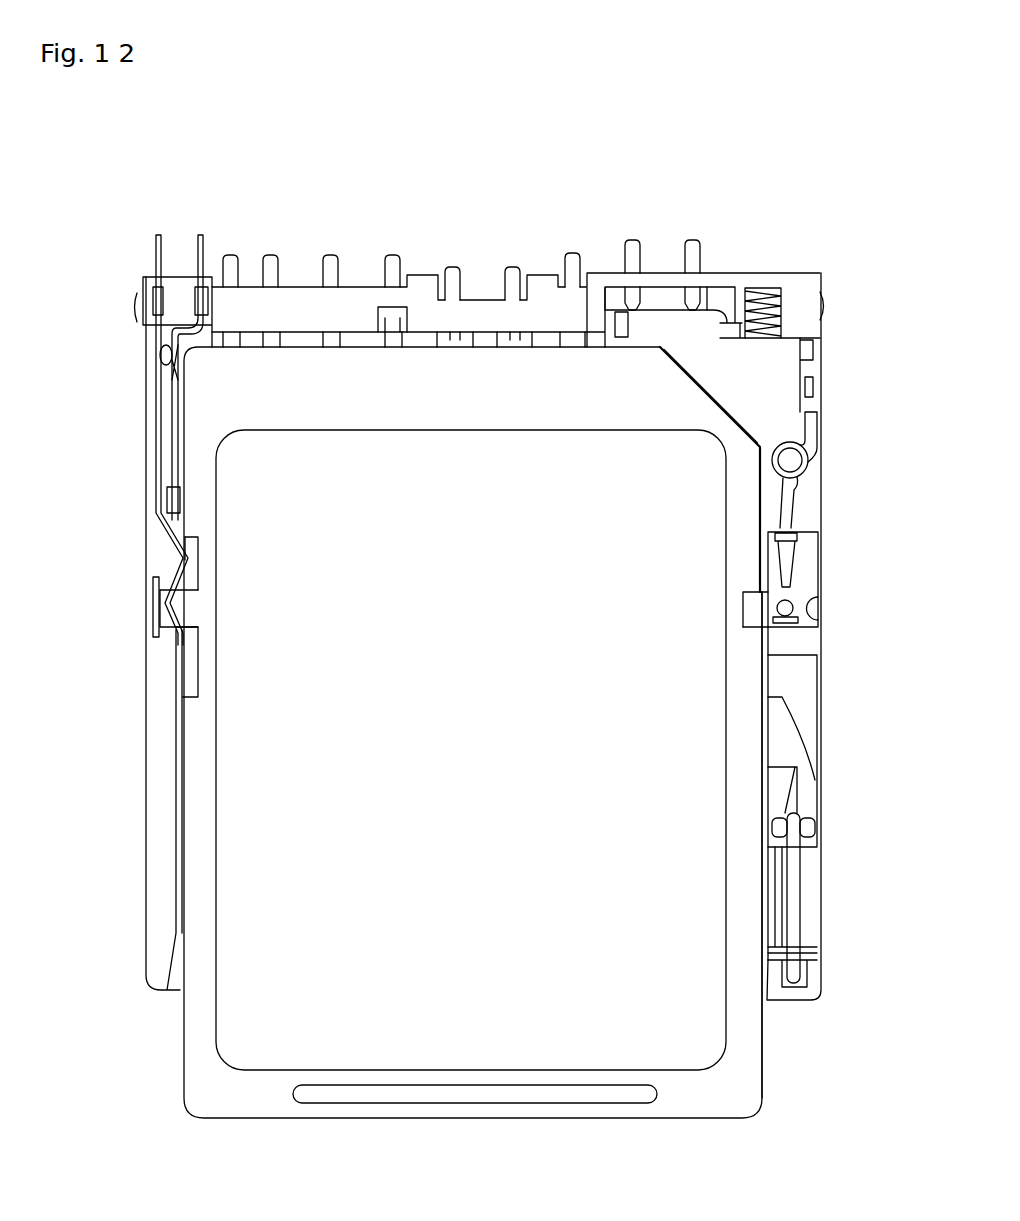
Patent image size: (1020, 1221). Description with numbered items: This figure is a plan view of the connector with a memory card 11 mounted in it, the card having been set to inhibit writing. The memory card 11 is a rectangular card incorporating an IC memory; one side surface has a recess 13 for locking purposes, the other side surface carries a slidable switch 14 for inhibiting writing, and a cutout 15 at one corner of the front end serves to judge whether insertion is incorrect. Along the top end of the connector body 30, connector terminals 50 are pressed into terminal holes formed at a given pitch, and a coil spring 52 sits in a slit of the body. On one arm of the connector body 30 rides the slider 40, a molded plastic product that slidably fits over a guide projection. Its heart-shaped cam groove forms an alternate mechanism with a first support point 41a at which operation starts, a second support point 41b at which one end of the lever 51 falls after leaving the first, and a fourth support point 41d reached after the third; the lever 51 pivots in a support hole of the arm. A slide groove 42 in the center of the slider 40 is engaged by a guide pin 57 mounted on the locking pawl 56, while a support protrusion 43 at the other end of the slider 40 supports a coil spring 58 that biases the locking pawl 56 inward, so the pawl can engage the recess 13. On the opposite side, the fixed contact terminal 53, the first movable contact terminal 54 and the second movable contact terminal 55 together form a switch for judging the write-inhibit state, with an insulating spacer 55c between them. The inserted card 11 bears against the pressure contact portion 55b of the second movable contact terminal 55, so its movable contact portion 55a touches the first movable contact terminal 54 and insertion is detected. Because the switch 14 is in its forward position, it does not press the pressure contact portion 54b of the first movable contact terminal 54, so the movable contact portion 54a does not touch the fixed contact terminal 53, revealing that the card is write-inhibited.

The memory card 11 is at (733, 1086).
The recess 13 is at (750, 622).
The switch 14 is at (187, 667).
The cutout 15 is at (700, 385).
The connector body 30 is at (736, 288).
The slider 40 is at (780, 373).
The first support point 41a is at (775, 705).
The second support point 41b is at (770, 830).
The fourth support point 41d is at (815, 828).
The slide groove 42 is at (810, 608).
The support protrusion 43 is at (790, 460).
The connector terminals 50 is at (276, 262).
The lever 51 is at (797, 903).
The coil spring 52 is at (783, 312).
The fixed contact terminal 53 is at (152, 580).
The first movable contact terminal 54 is at (156, 240).
The movable contact portion 54a is at (160, 603).
The pressure contact portion 54b is at (188, 563).
The second movable contact terminal 55 is at (202, 235).
The movable contact portion 55a is at (160, 352).
The pressure contact portion 55b is at (177, 374).
The insulating spacer 55c is at (165, 493).
The locking pawl 56 is at (752, 600).
The guide pin 57 is at (790, 604).
The coil spring 58 is at (788, 515).